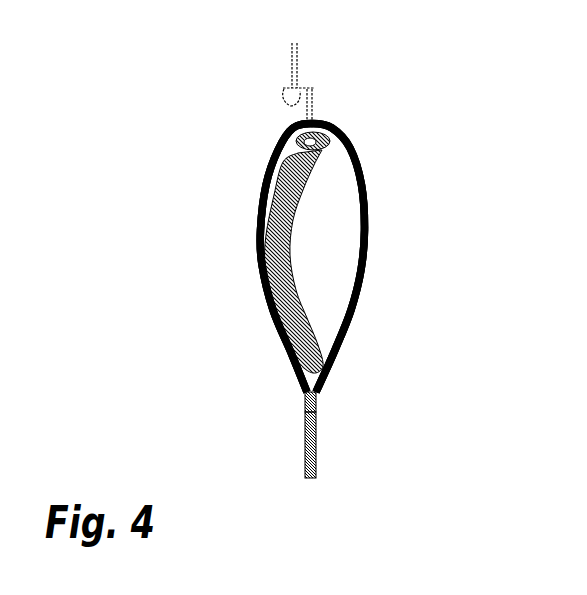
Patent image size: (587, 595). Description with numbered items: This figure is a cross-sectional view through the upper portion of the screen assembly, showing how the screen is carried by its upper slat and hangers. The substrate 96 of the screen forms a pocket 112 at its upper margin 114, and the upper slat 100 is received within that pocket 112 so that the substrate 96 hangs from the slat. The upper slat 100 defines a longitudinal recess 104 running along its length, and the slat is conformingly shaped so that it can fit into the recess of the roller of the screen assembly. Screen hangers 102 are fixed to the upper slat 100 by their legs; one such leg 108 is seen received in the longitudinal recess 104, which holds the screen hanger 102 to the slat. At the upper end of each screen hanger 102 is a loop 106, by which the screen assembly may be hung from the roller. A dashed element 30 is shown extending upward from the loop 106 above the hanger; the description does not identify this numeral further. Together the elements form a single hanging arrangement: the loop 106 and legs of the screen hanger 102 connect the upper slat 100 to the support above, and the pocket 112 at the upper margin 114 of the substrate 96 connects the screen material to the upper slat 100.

The guidewire 30 is at (297, 52).
The loop 106 is at (308, 93).
The screen hangers 102 is at (313, 107).
The longitudinal recess 104 is at (276, 153).
The leg 108 is at (318, 143).
The upper slat 100 is at (290, 256).
The pocket 112 is at (333, 292).
The upper margin 114 is at (305, 407).
The substrate 96 is at (316, 457).